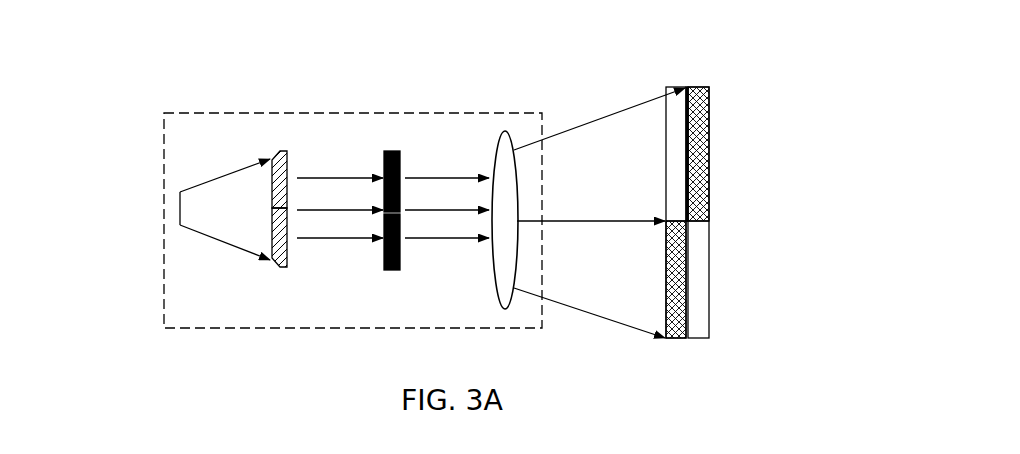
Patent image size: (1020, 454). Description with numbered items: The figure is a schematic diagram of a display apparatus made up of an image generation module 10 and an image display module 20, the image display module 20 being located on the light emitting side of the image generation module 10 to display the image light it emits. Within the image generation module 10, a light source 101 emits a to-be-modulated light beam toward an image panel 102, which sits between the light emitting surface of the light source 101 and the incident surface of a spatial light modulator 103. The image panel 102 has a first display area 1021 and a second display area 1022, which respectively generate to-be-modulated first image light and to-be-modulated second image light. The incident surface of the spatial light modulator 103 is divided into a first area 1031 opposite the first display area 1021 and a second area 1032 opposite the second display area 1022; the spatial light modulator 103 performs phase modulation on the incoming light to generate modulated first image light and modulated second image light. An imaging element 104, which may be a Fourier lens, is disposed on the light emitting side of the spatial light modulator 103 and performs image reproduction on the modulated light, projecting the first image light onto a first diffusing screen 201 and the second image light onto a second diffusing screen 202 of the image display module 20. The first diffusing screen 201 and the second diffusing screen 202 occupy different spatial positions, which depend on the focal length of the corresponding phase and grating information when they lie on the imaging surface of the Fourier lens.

The image generation module 10 is at (353, 220).
The light source 101 is at (180, 208).
The image panel 102 is at (240, 145).
The first display area 1021 is at (277, 150).
The second display area 1022 is at (273, 227).
The spatial light modulator 103 is at (361, 147).
The first area 1031 is at (385, 151).
The second area 1032 is at (384, 226).
The imaging element 104 is at (498, 151).
The image display module 20 is at (684, 182).
The first diffusing screen 201 is at (666, 89).
The second diffusing screen 202 is at (741, 207).